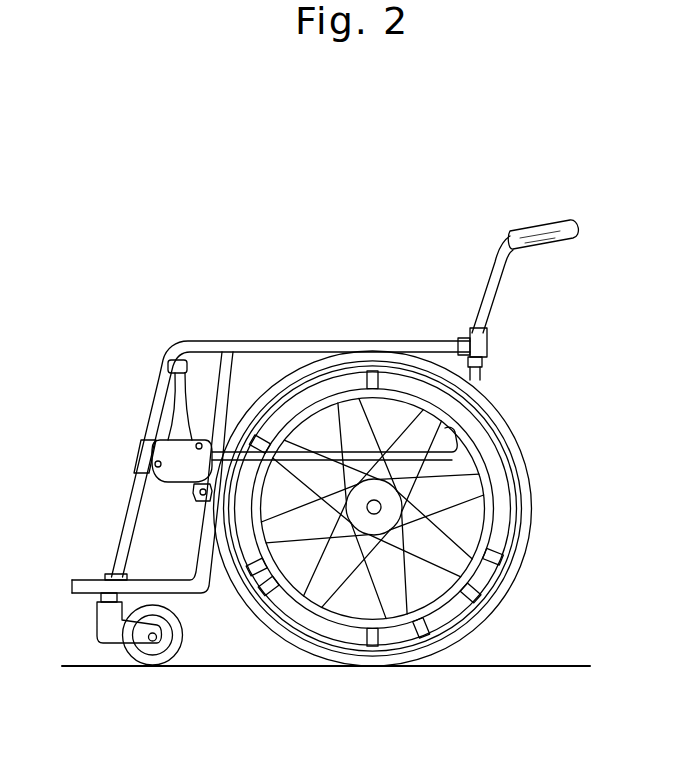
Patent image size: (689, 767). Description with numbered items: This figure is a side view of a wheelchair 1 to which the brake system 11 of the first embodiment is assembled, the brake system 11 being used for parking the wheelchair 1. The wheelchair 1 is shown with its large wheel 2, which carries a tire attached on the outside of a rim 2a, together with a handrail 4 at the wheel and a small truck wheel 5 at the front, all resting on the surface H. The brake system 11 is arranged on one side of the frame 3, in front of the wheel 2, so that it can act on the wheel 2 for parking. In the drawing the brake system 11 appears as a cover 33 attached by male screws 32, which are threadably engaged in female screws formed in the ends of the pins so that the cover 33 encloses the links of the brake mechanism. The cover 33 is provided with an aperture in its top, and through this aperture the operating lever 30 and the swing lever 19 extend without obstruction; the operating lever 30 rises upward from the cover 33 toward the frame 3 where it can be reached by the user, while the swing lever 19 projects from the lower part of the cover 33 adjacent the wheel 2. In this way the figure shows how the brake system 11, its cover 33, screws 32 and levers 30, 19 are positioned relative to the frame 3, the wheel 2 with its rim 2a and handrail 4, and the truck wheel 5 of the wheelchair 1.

The wheelchair 1 is at (351, 240).
The wheel 2 is at (345, 655).
The rim 2a is at (407, 647).
The frame 3 is at (214, 462).
The handrail 4 is at (492, 608).
The truck wheel 5 is at (155, 663).
The brake system 11 is at (132, 408).
The swing lever 19 is at (200, 498).
The operating lever 30 is at (178, 392).
The male screws 32 is at (200, 443).
The cover 33 is at (153, 452).
The ground surface H is at (562, 664).